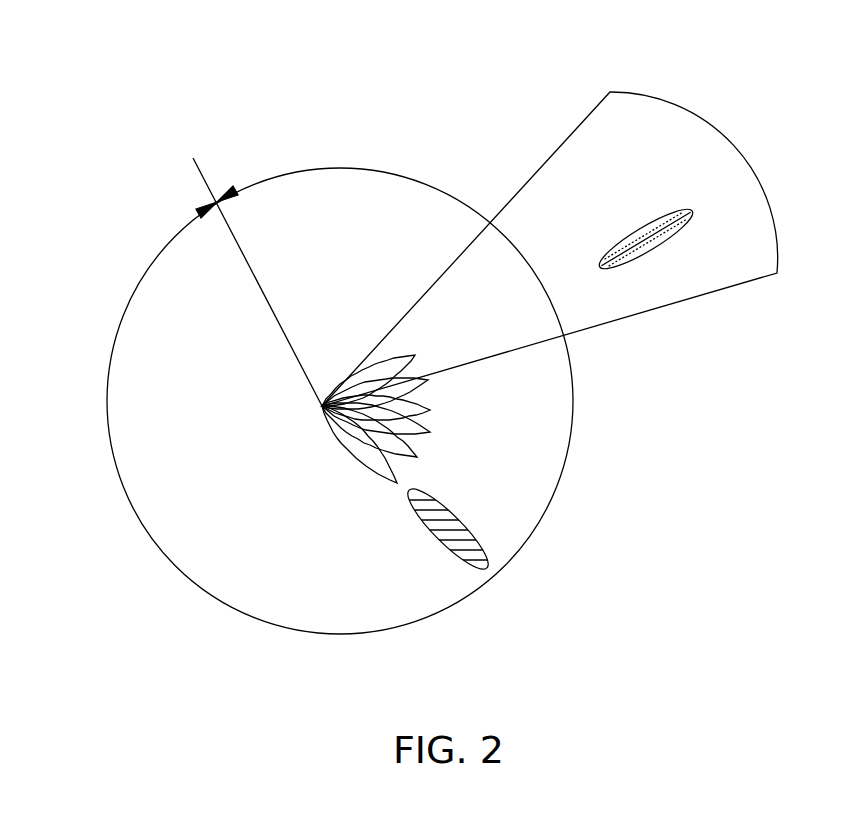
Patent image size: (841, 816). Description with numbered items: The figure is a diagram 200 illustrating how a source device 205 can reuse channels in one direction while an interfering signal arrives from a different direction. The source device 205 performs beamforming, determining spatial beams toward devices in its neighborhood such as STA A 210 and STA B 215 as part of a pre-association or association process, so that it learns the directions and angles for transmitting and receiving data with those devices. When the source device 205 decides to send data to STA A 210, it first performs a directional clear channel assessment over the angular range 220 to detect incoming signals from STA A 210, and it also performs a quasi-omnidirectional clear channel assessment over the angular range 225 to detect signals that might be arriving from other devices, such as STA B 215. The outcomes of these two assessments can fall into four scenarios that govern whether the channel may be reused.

The diagram 200 is at (336, 64).
The source device 205 is at (318, 404).
The STA A 210 is at (655, 220).
The STA B 215 is at (437, 503).
The angular range 220 is at (737, 142).
The angular range 225 is at (152, 260).